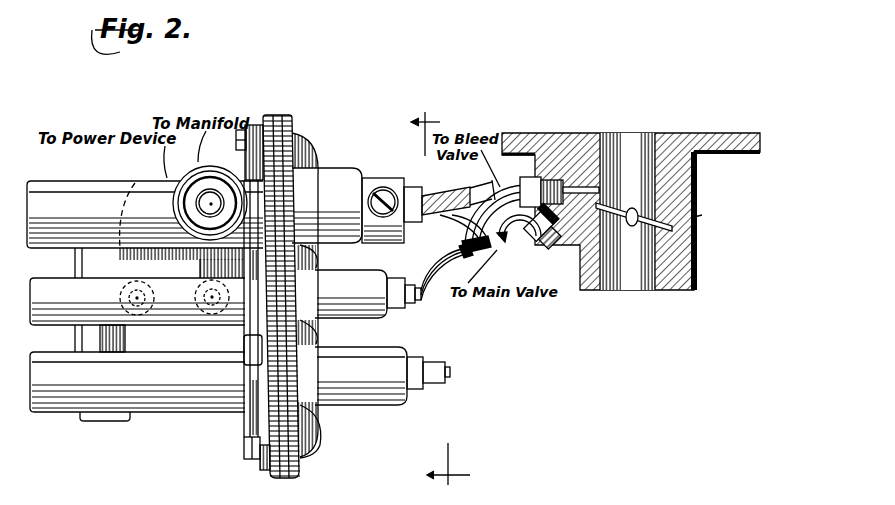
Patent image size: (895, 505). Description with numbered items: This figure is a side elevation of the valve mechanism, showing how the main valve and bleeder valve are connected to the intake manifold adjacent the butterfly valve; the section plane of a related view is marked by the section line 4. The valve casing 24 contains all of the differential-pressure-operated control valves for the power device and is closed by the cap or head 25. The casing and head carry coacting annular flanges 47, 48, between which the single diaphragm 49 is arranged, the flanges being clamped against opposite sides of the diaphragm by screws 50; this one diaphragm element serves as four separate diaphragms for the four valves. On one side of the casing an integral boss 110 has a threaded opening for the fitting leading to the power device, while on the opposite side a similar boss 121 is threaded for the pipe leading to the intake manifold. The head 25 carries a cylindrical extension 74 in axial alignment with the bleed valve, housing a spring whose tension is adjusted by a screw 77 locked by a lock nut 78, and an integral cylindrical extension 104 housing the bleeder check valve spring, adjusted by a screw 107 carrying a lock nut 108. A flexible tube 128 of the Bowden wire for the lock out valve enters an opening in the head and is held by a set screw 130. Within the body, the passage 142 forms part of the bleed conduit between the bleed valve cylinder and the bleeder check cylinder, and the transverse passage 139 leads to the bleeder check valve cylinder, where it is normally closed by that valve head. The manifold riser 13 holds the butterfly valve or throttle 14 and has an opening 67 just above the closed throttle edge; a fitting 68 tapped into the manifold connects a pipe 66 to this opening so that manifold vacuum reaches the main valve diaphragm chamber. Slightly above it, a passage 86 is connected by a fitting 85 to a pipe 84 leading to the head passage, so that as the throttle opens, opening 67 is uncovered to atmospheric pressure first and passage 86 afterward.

The valve casing 24 is at (72, 180).
The integral boss 110 is at (164, 180).
The boss 121 is at (222, 163).
The annular flange 47 is at (262, 120).
The diaphragm 49 is at (293, 122).
The annular flange 48 is at (295, 162).
The cap or head 25 is at (320, 436).
The set screw 130 is at (388, 189).
The flexible tube 128 is at (460, 192).
The fitting 85 is at (527, 182).
The passage 86 is at (603, 187).
The opening 67 is at (600, 201).
The riser 13 is at (706, 176).
The butterfly valve or throttle 14 is at (707, 219).
The fitting 68 is at (546, 251).
The pipe 66 is at (530, 258).
The cylindrical extension 74 is at (365, 320).
The passage 142 is at (131, 297).
The transverse passage 139 is at (205, 297).
The lock nut 78 is at (402, 280).
The screw 77 is at (418, 301).
The pipe 84 is at (428, 277).
The integral cylindrical extension 104 is at (388, 403).
The lock nut 108 is at (428, 390).
The screw 107 is at (450, 376).
The screws 50 is at (244, 458).
The section line 4 is at (440, 299).